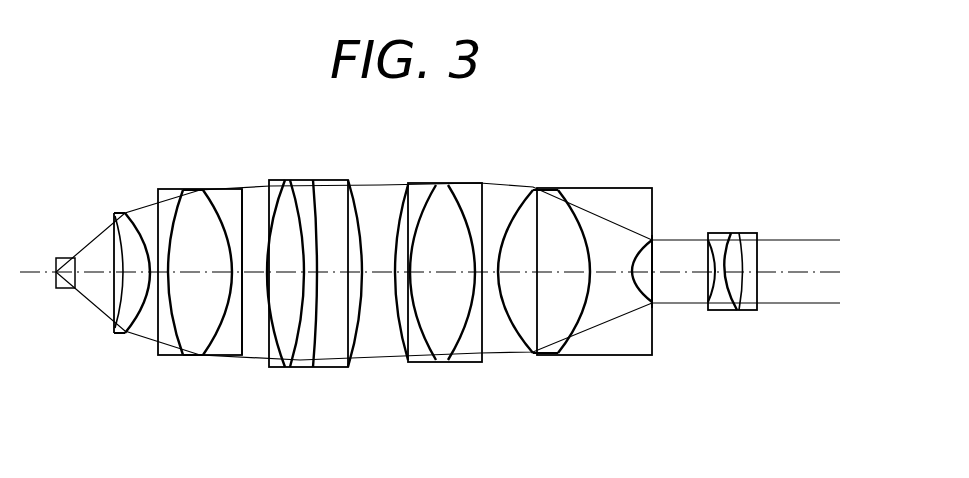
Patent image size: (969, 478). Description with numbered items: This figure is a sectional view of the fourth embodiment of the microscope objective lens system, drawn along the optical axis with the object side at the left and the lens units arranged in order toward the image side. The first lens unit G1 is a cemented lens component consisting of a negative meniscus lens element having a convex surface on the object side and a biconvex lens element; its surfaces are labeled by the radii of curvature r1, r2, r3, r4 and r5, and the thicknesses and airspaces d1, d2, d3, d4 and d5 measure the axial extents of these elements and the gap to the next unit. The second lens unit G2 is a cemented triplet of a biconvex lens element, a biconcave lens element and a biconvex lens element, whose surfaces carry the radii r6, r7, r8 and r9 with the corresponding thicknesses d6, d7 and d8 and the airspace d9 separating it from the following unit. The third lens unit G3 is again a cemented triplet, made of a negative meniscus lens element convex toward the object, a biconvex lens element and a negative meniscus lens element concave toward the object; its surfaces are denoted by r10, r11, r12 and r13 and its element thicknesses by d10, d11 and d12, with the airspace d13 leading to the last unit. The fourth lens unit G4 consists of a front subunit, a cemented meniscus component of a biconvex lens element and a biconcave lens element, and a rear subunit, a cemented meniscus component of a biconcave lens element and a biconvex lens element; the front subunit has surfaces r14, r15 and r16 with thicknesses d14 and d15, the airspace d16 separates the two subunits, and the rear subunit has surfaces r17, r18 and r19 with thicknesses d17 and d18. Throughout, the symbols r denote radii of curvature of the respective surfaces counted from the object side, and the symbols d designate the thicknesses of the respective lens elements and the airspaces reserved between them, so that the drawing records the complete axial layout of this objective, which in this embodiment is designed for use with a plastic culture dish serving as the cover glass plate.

The first lens unit G1 is at (73, 138).
The second lens unit G2 is at (343, 138).
The third lens unit G3 is at (365, 138).
The fourth lens unit G4 is at (803, 138).
The radius of curvature r1 is at (101, 225).
The radius of curvature r2 is at (133, 212).
The radius of curvature r3 is at (156, 225).
The radius of curvature r4 is at (206, 196).
The radius of curvature r5 is at (211, 190).
The radius of curvature r6 is at (254, 196).
The radius of curvature r7 is at (291, 190).
The radius of curvature r8 is at (320, 194).
The radius of curvature r9 is at (352, 190).
The radius of curvature r10 is at (393, 190).
The radius of curvature r11 is at (427, 190).
The radius of curvature r12 is at (460, 192).
The radius of curvature r13 is at (495, 190).
The radius of curvature r14 is at (531, 190).
The radius of curvature r15 is at (577, 190).
The radius of curvature r16 is at (637, 240).
The radius of curvature r17 is at (709, 240).
The radius of curvature r18 is at (735, 235).
The radius of curvature r19 is at (757, 235).
The lens thickness d1 is at (103, 312).
The lens thickness d2 is at (150, 290).
The lens thickness d3 is at (182, 288).
The airspace d4 is at (197, 290).
The airspace d5 is at (238, 290).
The lens thickness d6 is at (285, 290).
The lens thickness d7 is at (305, 290).
The lens thickness d8 is at (337, 290).
The airspace d9 is at (378, 290).
The lens thickness d10 is at (402, 290).
The lens thickness d11 is at (432, 290).
The lens thickness d12 is at (484, 290).
The airspace d13 is at (495, 295).
The lens thickness d14 is at (577, 283).
The lens thickness d15 is at (650, 305).
The airspace d16 is at (683, 275).
The lens thickness d17 is at (731, 300).
The lens thickness d18 is at (774, 280).